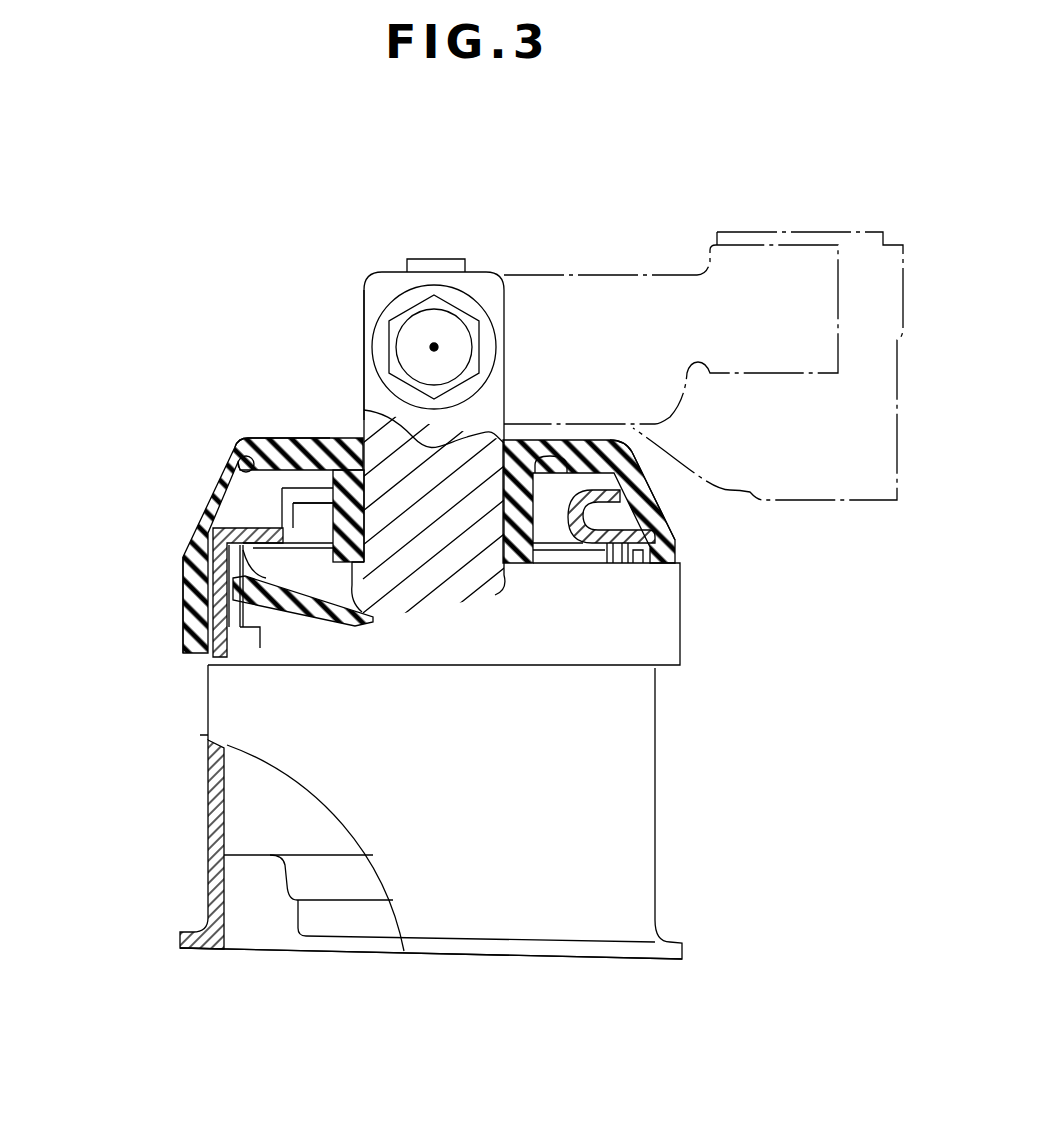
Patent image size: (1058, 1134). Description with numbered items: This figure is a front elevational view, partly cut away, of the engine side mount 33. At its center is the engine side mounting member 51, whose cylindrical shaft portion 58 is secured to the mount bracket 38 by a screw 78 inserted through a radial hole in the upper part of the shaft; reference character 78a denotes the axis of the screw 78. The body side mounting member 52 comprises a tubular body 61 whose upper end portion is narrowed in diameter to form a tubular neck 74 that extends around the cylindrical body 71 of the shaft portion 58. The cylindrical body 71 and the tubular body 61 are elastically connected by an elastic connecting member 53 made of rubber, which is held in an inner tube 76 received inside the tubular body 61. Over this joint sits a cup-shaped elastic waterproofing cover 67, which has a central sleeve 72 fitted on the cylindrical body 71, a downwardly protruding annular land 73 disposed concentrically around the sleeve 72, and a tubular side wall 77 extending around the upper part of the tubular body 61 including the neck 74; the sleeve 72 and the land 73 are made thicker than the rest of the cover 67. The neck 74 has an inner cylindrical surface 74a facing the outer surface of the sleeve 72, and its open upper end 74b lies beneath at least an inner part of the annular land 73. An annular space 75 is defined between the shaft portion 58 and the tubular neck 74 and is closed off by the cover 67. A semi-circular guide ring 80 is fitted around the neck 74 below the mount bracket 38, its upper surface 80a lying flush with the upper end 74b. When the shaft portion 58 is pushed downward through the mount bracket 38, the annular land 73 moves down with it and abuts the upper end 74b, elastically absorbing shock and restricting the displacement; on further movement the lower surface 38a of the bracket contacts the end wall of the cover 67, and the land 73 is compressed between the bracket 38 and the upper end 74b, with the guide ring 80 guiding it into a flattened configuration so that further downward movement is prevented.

The engine mount / mounting structure 33 is at (722, 800).
The mount bracket 38 is at (633, 275).
The lower surface of the mount bracket 38a is at (640, 430).
The engine side mounting member 51 is at (360, 300).
The body side mounting member 52 is at (518, 958).
The elastic connecting member 53 is at (687, 543).
The cylindrical shaft portion 58 is at (360, 353).
The tubular body 61 is at (207, 820).
The elastic cover 67 is at (187, 533).
The cylindrical body 71 is at (315, 515).
The central sleeve 72 is at (352, 612).
The annular land 73 is at (240, 472).
The tubular neck 74 is at (240, 470).
The inner cylindrical surface 74a is at (303, 500).
The open upper end 74b is at (567, 480).
The annular space 75 is at (270, 510).
The inner tube 76 is at (250, 855).
The tubular side wall 77 is at (178, 580).
The screw 78 is at (462, 308).
The axis of the screw 78a is at (432, 345).
The semi-circular guide ring 80 is at (613, 483).
The upper surface of the guide ring 80a is at (645, 540).